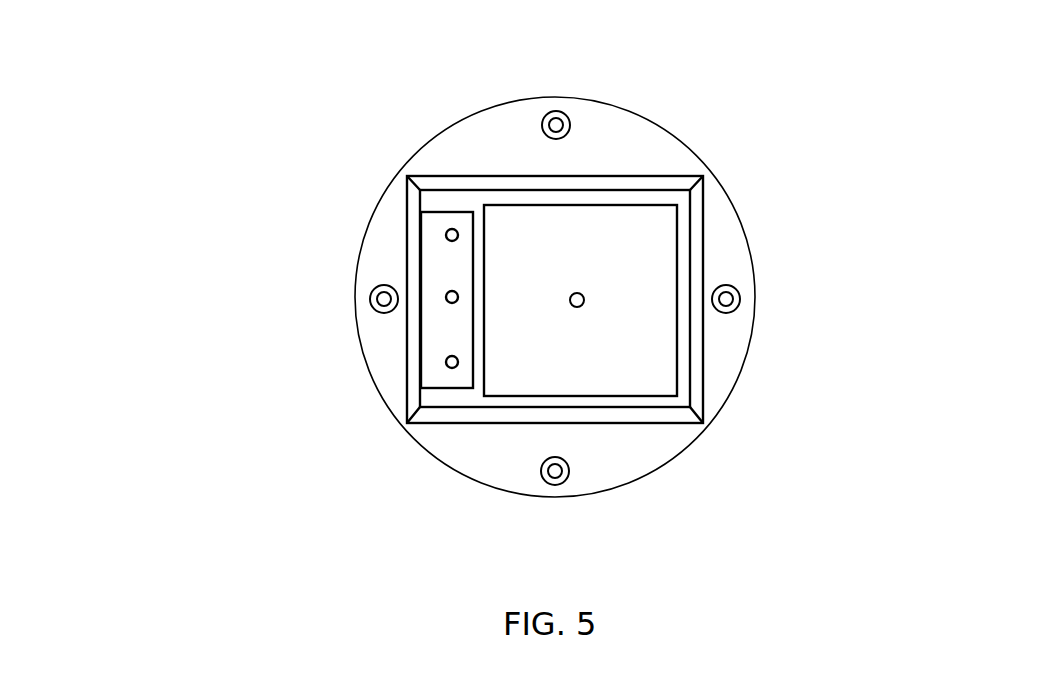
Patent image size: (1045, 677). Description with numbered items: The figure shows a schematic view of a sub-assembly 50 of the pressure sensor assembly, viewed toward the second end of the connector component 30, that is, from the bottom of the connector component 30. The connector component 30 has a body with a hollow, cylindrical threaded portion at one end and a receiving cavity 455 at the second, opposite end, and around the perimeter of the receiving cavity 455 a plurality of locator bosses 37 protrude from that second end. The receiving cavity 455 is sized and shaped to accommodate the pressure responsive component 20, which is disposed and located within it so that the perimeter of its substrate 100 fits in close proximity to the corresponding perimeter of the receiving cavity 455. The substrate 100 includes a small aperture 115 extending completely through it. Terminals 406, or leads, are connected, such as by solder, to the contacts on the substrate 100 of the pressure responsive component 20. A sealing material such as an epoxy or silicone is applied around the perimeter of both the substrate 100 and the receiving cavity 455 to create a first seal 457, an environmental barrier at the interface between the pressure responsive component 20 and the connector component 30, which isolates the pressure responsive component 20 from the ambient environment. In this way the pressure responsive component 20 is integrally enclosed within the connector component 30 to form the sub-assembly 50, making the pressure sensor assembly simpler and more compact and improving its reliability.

The sub-assembly 50 is at (138, 161).
The connector component 30 is at (683, 138).
The locator bosses 37 is at (557, 124).
The pressure responsive component 20 is at (490, 158).
The first seal 457 is at (412, 237).
The receiving cavity 455 is at (660, 412).
The substrate 100 is at (642, 265).
The aperture 115 is at (580, 306).
The terminals 406 is at (447, 362).